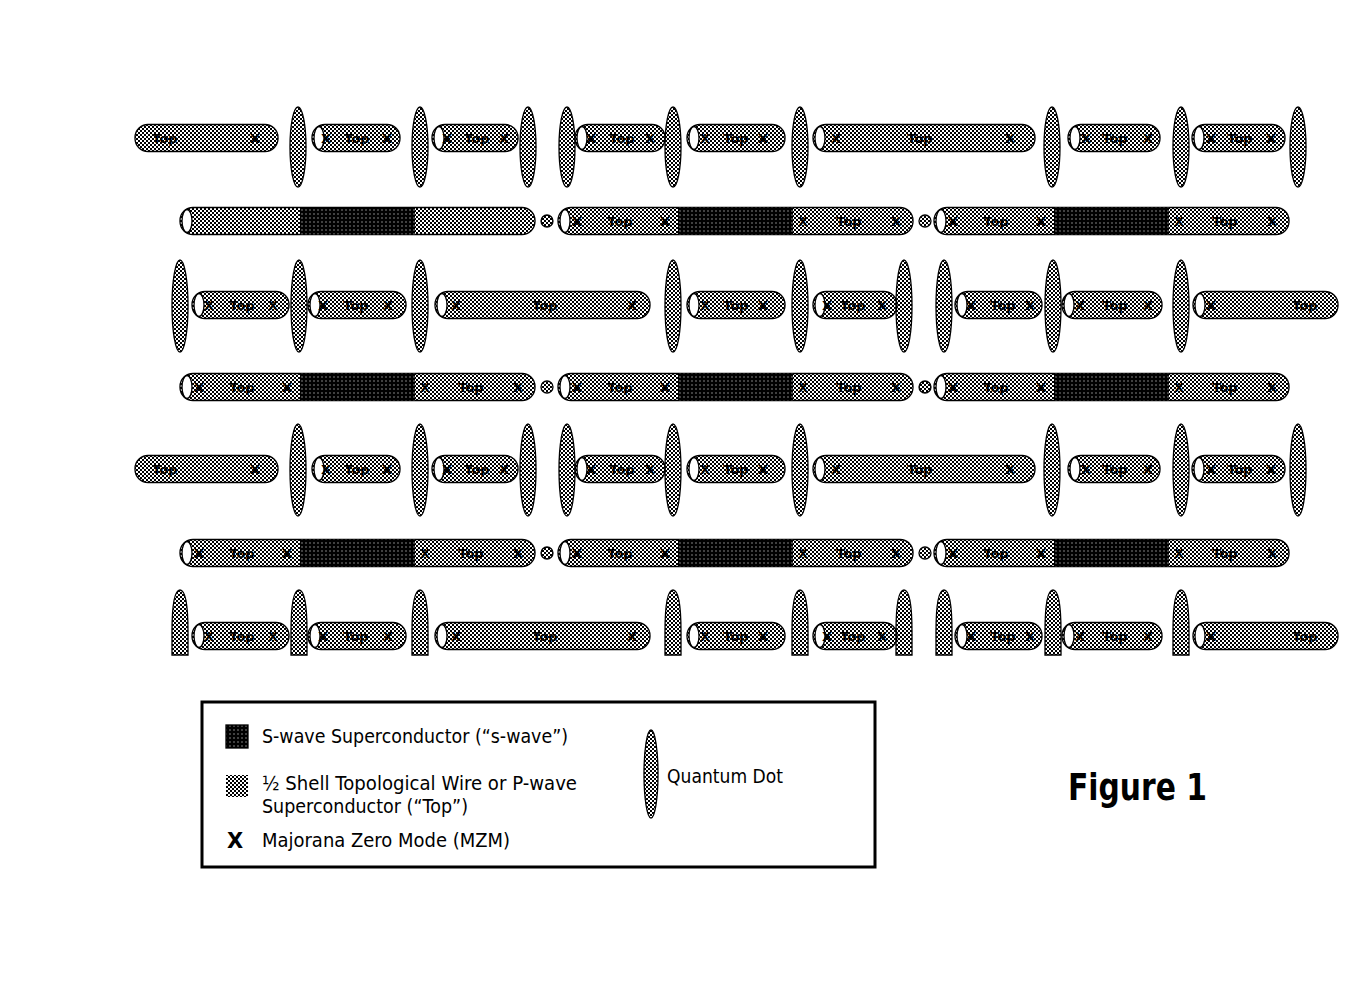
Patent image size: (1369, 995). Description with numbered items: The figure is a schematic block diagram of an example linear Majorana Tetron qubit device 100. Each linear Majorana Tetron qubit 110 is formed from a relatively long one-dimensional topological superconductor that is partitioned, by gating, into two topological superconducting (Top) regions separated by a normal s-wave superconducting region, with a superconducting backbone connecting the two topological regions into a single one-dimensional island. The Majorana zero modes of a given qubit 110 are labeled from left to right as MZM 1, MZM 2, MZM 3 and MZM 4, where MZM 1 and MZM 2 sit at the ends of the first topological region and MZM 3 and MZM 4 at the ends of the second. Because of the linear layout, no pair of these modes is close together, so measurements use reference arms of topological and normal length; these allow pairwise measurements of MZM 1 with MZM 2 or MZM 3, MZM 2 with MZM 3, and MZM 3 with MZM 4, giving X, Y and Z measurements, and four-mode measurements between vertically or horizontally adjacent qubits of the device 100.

The linear Majorana Tetron qubit device 100 is at (266, 54).
The Majorana Tetron qubit 110 is at (206, 186).
The MZM 1 is at (198, 236).
The MZM 2 is at (288, 236).
The MZM 3 is at (425, 236).
The MZM 4 is at (518, 236).